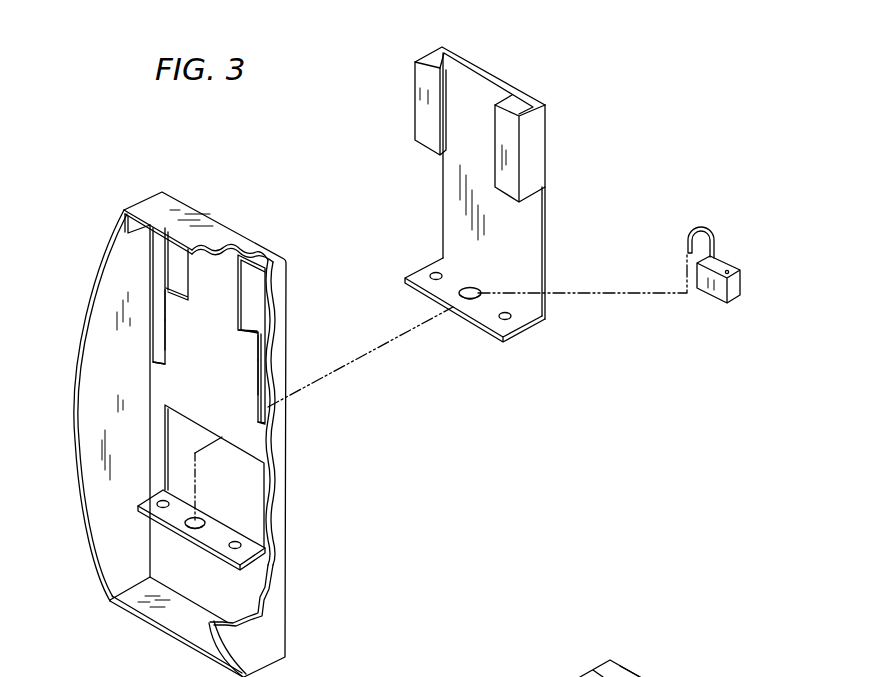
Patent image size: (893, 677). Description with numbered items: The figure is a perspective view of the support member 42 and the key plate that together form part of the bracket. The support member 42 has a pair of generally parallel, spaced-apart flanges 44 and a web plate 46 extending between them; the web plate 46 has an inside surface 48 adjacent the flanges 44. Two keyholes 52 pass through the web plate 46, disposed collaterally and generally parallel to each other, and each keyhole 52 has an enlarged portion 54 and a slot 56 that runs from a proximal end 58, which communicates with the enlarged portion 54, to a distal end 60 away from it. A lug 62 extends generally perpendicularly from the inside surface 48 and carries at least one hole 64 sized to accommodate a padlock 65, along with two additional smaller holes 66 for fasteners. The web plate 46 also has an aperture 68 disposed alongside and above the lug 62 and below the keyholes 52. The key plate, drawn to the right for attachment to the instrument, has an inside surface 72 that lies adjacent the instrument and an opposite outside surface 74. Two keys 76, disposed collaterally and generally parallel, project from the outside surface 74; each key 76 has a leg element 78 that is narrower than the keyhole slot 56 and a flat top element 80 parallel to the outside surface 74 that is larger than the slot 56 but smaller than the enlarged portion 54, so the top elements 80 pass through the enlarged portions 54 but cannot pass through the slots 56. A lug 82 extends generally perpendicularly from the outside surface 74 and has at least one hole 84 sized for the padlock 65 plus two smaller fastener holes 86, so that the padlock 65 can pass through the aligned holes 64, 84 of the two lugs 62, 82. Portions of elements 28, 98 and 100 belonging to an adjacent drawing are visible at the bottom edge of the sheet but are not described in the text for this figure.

In FIG. 3, the support member 42 is at (92, 240).
In FIG. 3, the flanges 44 is at (84, 390).
In FIG. 3, the web plate 46 is at (257, 575).
In FIG. 3, the inside surface 48 is at (267, 433).
In FIG. 3, the keyholes 52 is at (195, 272).
In FIG. 3, the enlarged portion 54 is at (173, 267).
In FIG. 3, the slot 56 is at (167, 323).
In FIG. 3, the proximal end 58 is at (167, 293).
In FIG. 3, the distal end 60 is at (167, 363).
In FIG. 3, the lug 62 is at (213, 533).
In FIG. 3, the hole 64 is at (197, 523).
In FIG. 3, the smaller holes 66 is at (163, 503).
In FIG. 3, the aperture 68 is at (253, 497).
In FIG. 3, the inside surface 72 is at (556, 224).
In FIG. 3, the outside surface 74 is at (535, 270).
In FIG. 3, the keys 76 is at (413, 87).
In FIG. 3, the leg element 78 is at (442, 48).
In FIG. 3, the top element 80 is at (507, 127).
In FIG. 3, the lug 82 is at (528, 327).
In FIG. 3, the hole 84 is at (478, 298).
In FIG. 3, the smaller holes 86 is at (432, 276).
In FIG. 3, the padlock 65 is at (743, 285).
In FIG. 4, the housing 28 is at (580, 676).
In FIG. 4, the lid edge 100 is at (633, 676).
In FIG. 4, the lid 98 is at (525, 671).